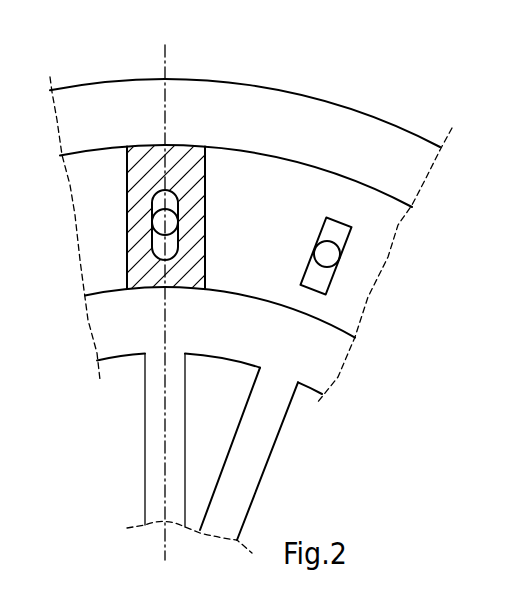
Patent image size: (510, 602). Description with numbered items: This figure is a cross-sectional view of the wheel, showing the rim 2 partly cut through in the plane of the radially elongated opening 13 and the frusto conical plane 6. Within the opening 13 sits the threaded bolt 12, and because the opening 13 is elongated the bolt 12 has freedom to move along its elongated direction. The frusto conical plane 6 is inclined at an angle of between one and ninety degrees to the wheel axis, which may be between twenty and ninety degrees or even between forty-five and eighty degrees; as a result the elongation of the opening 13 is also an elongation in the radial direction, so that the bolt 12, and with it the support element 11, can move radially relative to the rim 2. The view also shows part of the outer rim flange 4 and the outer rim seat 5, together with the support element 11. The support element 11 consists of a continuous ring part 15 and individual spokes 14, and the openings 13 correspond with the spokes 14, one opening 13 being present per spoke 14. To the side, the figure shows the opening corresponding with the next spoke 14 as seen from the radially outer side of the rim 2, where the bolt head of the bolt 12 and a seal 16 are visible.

The rim 2 is at (388, 223).
The outer rim flange 4 is at (275, 98).
The yoke ring 5 is at (318, 137).
The frusto conical plane 6 is at (90, 252).
The support element 11 is at (258, 452).
The threaded bolt 12 is at (155, 221).
The radially elongated opening 13 is at (152, 204).
The spokes 14 is at (345, 373).
The continuous ring part 15 is at (342, 345).
The seal 16 is at (337, 233).